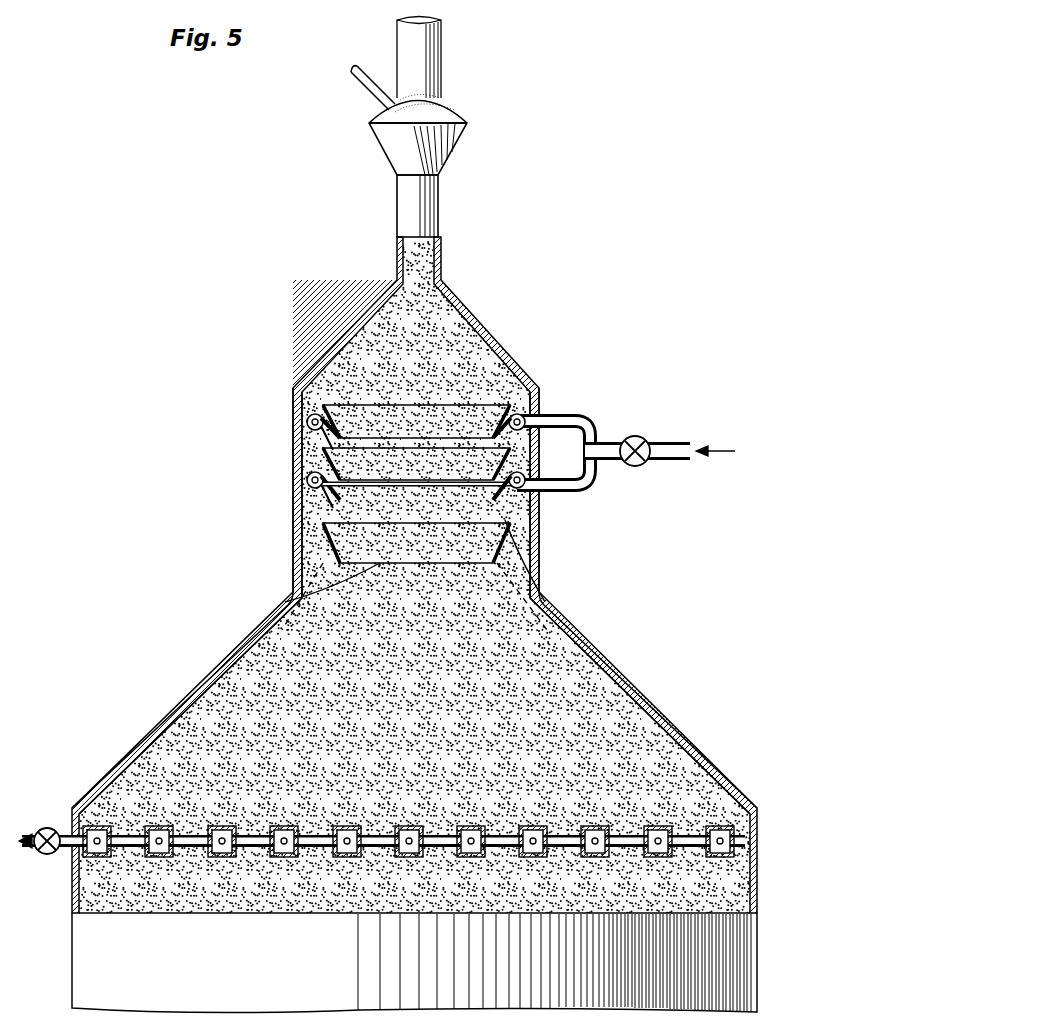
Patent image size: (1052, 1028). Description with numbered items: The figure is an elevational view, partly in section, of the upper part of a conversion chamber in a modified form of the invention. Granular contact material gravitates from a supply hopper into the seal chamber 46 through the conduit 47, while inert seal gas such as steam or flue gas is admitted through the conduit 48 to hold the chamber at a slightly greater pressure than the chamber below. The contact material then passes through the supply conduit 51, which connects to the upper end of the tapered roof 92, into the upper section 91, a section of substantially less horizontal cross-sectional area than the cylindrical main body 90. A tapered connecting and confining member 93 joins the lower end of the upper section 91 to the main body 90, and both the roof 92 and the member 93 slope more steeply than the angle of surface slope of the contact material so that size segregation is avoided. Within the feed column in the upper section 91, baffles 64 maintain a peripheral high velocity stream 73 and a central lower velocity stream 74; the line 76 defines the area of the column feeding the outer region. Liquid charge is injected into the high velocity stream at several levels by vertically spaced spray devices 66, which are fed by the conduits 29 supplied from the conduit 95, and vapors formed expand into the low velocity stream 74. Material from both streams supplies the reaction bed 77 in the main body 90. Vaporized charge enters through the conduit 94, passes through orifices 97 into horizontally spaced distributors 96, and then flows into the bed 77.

The conduit 47 is at (430, 63).
The conduit 48 is at (360, 88).
The seal chamber 46 is at (467, 143).
The supply conduit 51 is at (440, 213).
The tapered roof 92 is at (489, 342).
The spray devices 66 is at (541, 396).
The conduits 29 is at (580, 493).
The baffles 64 is at (333, 455).
The upper section 91 is at (294, 535).
The peripheral high velocity stream 73 is at (521, 519).
The line 76 is at (541, 576).
The central lower velocity stream 74 is at (290, 603).
The reaction bed 77 is at (142, 752).
The tapered connecting and confining member 93 is at (663, 718).
The conduit 94 is at (47, 828).
The orifices 97 is at (416, 826).
The distributors 96 is at (653, 826).
The conduit 95 is at (664, 462).
The cylindrical main body 90 is at (70, 986).